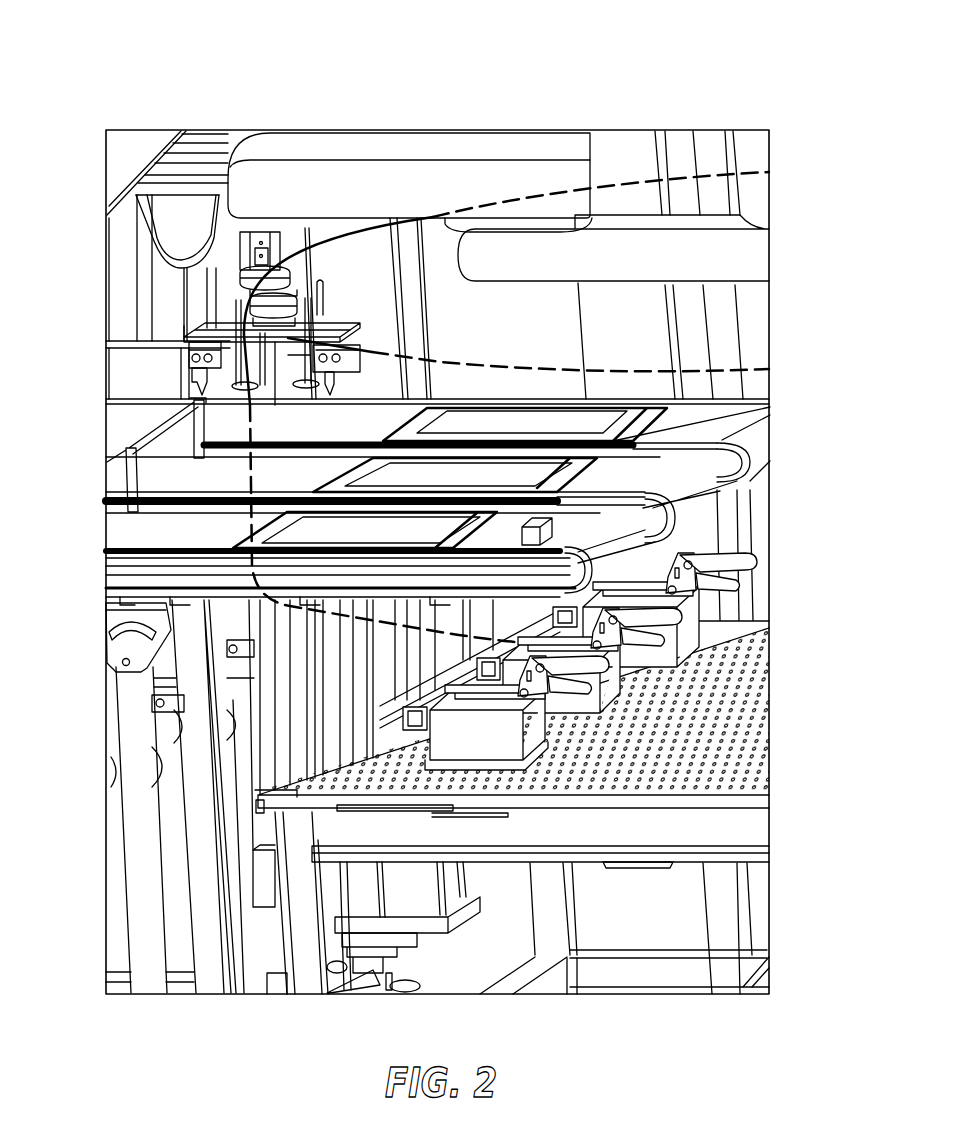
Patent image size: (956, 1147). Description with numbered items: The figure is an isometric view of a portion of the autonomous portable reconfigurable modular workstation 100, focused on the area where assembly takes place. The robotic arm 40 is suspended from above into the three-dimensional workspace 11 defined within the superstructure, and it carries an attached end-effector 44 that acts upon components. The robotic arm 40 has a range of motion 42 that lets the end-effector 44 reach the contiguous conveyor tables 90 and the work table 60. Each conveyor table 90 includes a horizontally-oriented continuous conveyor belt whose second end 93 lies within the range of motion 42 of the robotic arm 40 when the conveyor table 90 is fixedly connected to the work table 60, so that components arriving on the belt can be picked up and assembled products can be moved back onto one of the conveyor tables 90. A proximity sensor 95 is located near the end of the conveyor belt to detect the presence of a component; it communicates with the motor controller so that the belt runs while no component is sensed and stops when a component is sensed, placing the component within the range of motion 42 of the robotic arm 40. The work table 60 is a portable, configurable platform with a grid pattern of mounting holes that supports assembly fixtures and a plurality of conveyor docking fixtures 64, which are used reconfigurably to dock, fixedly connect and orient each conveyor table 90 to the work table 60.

The autonomous portable reconfigurable modular workstation 100 is at (113, 117).
The robotic arm 40 is at (253, 147).
The end-effector 44 is at (184, 338).
The range of motion 42 is at (247, 432).
The three-dimensional workspace 11 is at (232, 478).
The proximity sensor 95 is at (553, 532).
The conveyor table 90 is at (135, 573).
The second end 93 is at (435, 533).
The conveyor docking fixtures 64 is at (540, 732).
The work table 60 is at (678, 768).